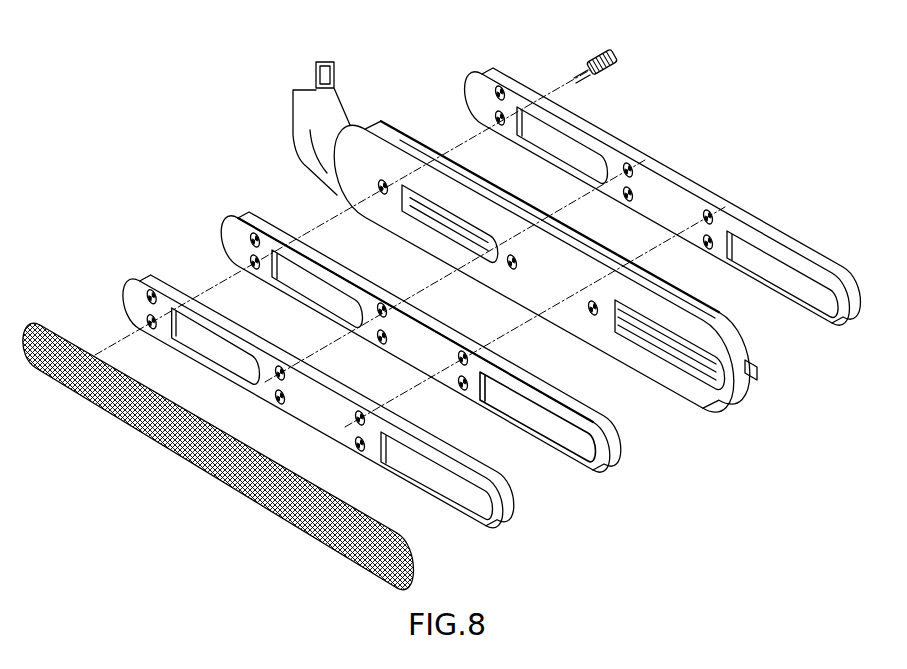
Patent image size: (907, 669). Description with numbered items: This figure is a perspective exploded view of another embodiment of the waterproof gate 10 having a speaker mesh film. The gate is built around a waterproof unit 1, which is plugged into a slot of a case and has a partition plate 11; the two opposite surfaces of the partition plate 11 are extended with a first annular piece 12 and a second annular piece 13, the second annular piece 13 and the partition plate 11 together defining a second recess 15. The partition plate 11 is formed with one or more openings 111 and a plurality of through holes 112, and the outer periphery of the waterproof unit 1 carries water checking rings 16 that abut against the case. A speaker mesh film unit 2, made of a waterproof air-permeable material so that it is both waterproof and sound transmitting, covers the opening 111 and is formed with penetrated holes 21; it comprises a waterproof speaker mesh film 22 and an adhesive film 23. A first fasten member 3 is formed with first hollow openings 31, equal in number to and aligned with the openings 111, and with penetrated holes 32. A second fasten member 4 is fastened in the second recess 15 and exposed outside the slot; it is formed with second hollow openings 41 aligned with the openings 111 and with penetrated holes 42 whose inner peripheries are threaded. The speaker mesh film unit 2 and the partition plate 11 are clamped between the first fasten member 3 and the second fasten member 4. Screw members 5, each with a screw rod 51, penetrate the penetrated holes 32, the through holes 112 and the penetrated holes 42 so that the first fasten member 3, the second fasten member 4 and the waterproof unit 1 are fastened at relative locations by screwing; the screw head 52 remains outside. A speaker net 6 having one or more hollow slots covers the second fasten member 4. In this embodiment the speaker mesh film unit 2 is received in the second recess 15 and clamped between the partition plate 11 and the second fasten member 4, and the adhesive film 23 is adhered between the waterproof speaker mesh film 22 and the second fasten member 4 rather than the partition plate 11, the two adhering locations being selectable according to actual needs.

The waterproof gate 10 is at (453, 44).
The waterproof unit 1 is at (768, 340).
The partition plate 11 is at (532, 278).
The opening 111 is at (412, 236).
The through hole 112 is at (378, 190).
The first annular piece 12 is at (700, 290).
The second annular piece 13 is at (650, 400).
The second recess 15 is at (296, 158).
The water checking ring 16 is at (770, 366).
The speaker mesh film unit 2 is at (592, 497).
The penetrated hole 21 is at (256, 270).
The waterproof speaker mesh film 22 is at (553, 418).
The adhesive film 23 is at (456, 400).
The first fasten member 3 is at (660, 227).
The first hollow opening 31 is at (560, 152).
The penetrated hole 32 is at (495, 117).
The second fasten member 4 is at (313, 407).
The second hollow opening 41 is at (203, 350).
The penetrated hole 42 is at (146, 320).
The screw member 5 is at (640, 96).
The screw rod 51 is at (602, 74).
The screw head 52 is at (628, 56).
The speaker net 6 is at (170, 454).